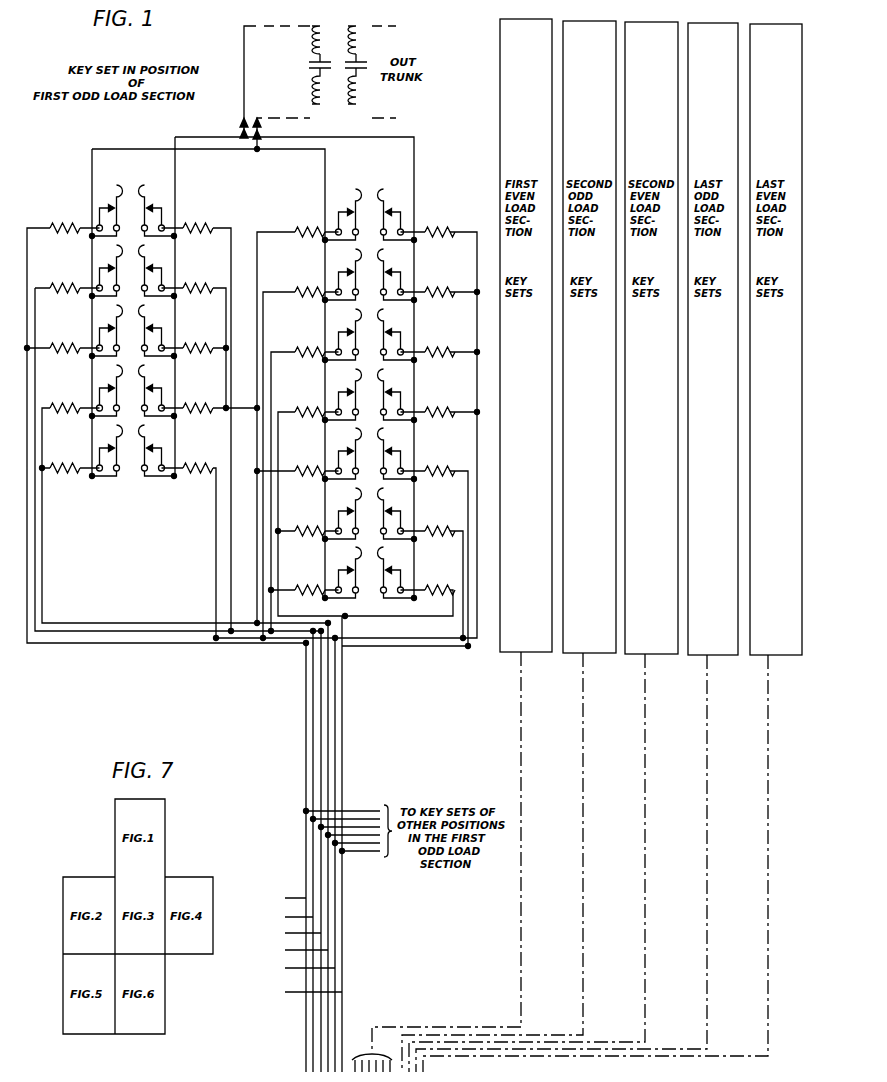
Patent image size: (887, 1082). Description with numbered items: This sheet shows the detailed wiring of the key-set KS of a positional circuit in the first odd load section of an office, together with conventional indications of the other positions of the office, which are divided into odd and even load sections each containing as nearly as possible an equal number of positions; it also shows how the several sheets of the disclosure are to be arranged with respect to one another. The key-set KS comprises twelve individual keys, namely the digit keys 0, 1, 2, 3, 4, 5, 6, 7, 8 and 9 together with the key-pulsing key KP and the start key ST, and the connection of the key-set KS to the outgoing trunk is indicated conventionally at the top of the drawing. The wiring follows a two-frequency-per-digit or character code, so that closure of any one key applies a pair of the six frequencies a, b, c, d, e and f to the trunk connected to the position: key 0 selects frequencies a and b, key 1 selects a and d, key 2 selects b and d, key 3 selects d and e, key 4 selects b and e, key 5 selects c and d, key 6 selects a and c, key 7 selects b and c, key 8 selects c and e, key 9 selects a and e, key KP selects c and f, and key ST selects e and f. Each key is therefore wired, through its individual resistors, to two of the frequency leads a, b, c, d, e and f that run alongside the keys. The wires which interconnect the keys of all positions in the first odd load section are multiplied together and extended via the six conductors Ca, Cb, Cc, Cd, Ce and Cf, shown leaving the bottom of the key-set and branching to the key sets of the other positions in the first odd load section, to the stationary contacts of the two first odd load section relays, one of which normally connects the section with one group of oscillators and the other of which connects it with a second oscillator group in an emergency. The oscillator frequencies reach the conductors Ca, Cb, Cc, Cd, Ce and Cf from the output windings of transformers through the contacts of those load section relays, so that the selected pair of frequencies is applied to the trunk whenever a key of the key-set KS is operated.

The key-set KS is at (252, 391).
The key 0 is at (133, 452).
The key 1 is at (133, 392).
The key 2 is at (133, 332).
The key 3 is at (133, 272).
The key 4 is at (133, 212).
The key 5 is at (370, 216).
The key 6 is at (370, 276).
The key 7 is at (370, 336).
The key 8 is at (370, 396).
The key 9 is at (370, 455).
The key-pulsing key KP is at (370, 515).
The start key ST is at (370, 574).
The frequency a is at (184, 466).
The frequency b is at (166, 435).
The frequency c is at (347, 436).
The frequency d is at (254, 429).
The frequency e is at (253, 438).
The frequency f is at (361, 499).
The conductor Ca is at (324, 857).
The conductor Cb is at (322, 851).
The conductor Cc is at (322, 851).
The conductor Cd is at (322, 847).
The conductor Ce is at (321, 855).
The conductor Cf is at (320, 844).